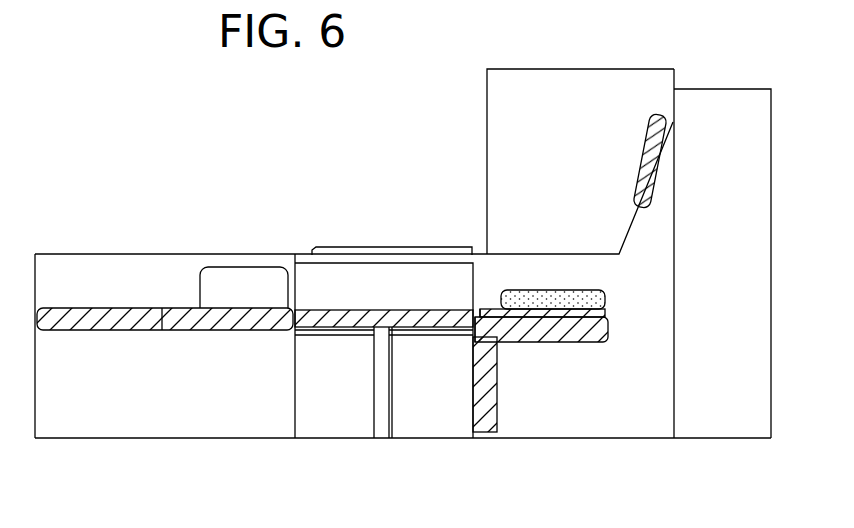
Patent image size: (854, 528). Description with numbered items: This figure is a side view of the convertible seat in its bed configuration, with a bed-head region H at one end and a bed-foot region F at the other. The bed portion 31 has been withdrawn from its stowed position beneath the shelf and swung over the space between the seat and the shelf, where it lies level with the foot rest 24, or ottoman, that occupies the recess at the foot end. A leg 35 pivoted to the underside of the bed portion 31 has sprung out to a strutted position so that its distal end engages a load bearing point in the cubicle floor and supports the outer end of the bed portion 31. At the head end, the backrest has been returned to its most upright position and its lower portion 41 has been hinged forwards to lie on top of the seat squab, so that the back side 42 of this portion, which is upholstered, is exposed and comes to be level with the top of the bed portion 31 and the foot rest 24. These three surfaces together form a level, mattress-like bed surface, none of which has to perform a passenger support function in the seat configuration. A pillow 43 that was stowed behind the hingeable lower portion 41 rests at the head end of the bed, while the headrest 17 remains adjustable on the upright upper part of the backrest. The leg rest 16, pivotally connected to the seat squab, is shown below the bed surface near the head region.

The bed-foot region F is at (105, 287).
The foot rest 24 is at (227, 316).
The bed portion 31 is at (367, 314).
The back side 42 is at (497, 305).
The bed-head region H is at (553, 273).
The headrest 17 is at (668, 122).
The pillow 43 is at (580, 290).
The lower portion 41 is at (607, 315).
The leg rest 16 is at (493, 376).
The leg 35 is at (380, 388).